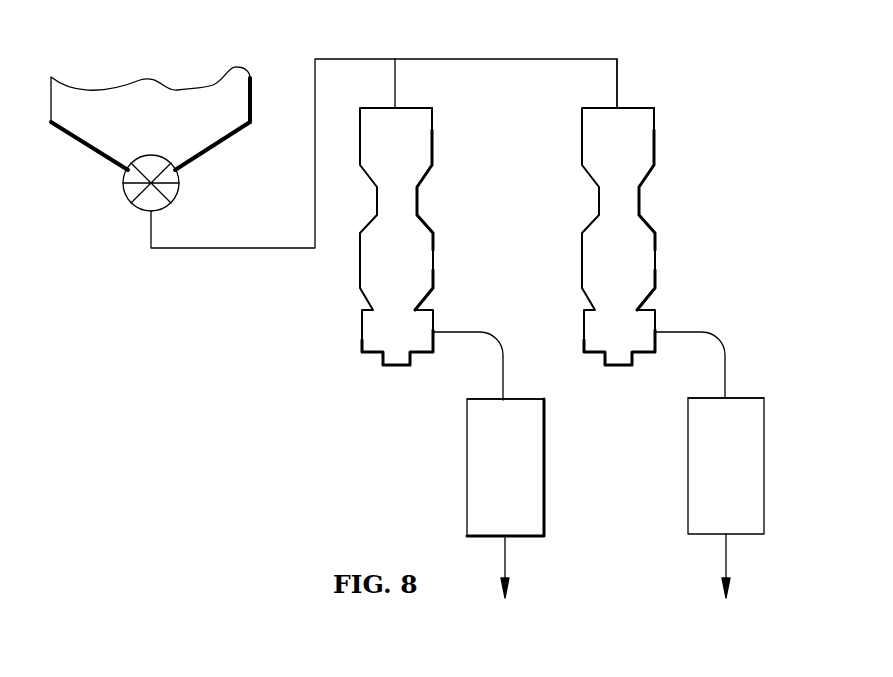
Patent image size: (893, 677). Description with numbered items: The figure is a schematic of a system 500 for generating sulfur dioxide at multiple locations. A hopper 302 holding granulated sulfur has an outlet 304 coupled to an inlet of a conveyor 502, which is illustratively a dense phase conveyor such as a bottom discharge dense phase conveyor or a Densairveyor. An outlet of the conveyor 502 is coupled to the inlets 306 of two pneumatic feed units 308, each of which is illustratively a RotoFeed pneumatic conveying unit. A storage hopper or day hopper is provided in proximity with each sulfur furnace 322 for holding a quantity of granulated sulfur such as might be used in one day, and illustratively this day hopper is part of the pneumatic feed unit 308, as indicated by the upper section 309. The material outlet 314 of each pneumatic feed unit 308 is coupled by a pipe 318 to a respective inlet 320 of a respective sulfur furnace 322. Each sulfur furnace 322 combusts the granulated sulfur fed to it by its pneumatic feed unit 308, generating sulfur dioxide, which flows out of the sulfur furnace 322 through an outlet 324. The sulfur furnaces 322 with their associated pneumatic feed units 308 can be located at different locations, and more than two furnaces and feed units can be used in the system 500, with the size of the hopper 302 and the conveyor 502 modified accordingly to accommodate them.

The hopper 302 is at (250, 98).
The outlet 304 is at (179, 172).
The inlet 306 is at (396, 106).
The pneumatic feed unit 308 is at (430, 205).
The storage hopper or day hopper 309 is at (433, 122).
The material outlet 314 is at (433, 328).
The pipe 318 is at (502, 358).
The inlet 320 is at (504, 399).
The sulfur furnace 322 is at (467, 447).
The outlet 324 is at (500, 536).
The system 500 is at (309, 418).
The conveyor 502 is at (165, 207).